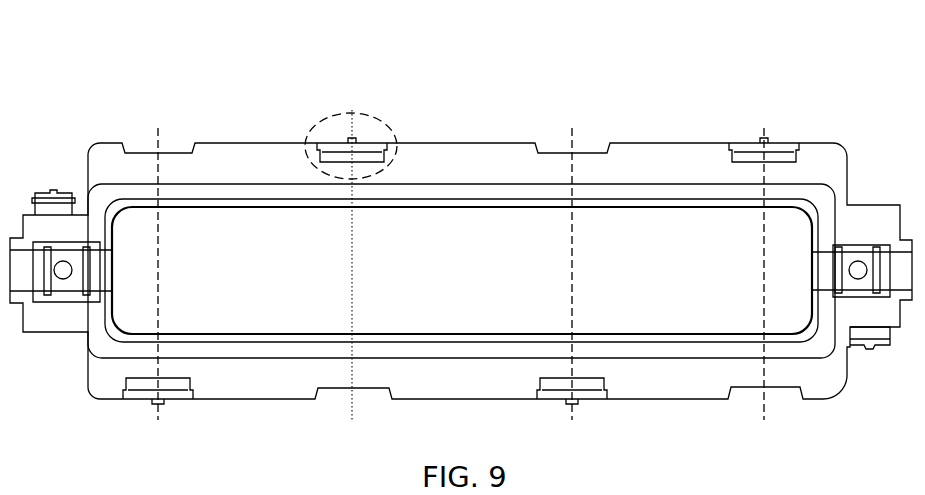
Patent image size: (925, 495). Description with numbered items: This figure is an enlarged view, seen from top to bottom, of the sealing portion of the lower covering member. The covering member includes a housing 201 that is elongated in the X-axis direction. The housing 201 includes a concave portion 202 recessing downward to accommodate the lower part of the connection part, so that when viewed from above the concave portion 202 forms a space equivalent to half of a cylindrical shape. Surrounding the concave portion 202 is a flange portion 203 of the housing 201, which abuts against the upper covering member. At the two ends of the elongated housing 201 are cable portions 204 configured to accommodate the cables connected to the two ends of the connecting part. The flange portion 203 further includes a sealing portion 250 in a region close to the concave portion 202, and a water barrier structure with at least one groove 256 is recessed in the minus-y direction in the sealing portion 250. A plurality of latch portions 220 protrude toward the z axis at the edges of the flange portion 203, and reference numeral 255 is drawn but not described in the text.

The housing 201 is at (425, 240).
The concave portion 202 is at (507, 234).
The flange portion 203 is at (265, 163).
The cable portion 204 is at (43, 230).
The latch portion 220 is at (352, 113).
The sealing portion 250 is at (140, 193).
The connector block 255 is at (63, 245).
The groove 256 is at (88, 297).